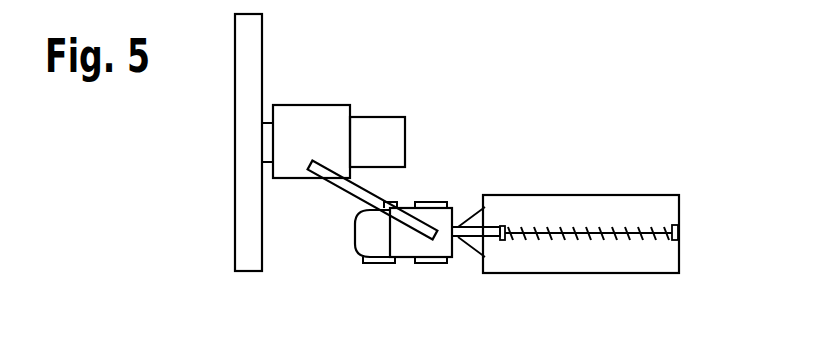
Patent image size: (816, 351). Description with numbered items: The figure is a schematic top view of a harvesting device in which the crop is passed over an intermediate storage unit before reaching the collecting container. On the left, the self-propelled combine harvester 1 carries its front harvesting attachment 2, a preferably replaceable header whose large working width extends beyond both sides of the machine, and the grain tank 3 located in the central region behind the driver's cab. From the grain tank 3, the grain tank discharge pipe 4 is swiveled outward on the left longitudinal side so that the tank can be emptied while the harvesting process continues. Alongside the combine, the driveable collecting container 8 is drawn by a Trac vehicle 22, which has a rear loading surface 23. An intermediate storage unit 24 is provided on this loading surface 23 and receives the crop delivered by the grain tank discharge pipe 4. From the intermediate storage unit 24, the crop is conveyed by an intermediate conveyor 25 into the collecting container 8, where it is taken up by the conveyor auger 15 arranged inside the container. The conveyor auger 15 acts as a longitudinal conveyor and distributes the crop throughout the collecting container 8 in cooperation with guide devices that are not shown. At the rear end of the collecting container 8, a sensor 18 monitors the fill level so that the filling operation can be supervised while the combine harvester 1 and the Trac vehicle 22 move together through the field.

The self-propelled combine harvester 1 is at (407, 130).
The front harvesting attachment 2 is at (247, 186).
The grain tank 3 is at (305, 122).
The grain tank discharge pipe 4 is at (333, 182).
The collecting container 8 is at (552, 195).
The conveyor auger 15 is at (633, 232).
The sensor 18 is at (678, 233).
The Trac vehicle 22 is at (367, 238).
The rear loading surface 23 is at (403, 205).
The intermediate storage unit 24 is at (408, 248).
The intermediate conveyor 25 is at (473, 232).